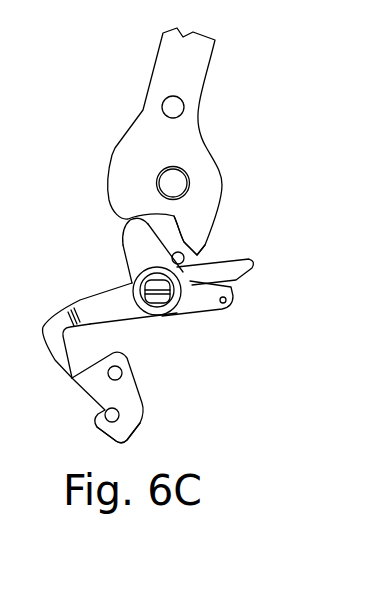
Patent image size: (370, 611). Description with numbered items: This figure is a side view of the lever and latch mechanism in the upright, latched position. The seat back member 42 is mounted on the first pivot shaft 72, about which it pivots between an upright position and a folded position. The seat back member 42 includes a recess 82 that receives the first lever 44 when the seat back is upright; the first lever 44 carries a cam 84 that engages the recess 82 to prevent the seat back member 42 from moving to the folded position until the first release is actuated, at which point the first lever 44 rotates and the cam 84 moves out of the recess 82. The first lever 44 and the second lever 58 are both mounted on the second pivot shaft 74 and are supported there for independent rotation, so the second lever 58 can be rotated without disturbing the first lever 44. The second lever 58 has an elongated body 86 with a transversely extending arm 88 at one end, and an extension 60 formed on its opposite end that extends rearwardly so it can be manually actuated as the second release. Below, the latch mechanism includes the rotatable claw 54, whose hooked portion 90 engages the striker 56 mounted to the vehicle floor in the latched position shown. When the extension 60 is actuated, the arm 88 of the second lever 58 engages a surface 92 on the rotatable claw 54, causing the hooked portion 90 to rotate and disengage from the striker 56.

The seat back member 42 is at (142, 128).
The first pivot shaft 72 is at (182, 183).
The recess 82 is at (183, 237).
The second pivot shaft 74 is at (173, 290).
The cam 84 is at (120, 243).
The first lever 44 is at (130, 255).
The elongated body 86 is at (67, 297).
The arm 88 is at (52, 343).
The surface 92 is at (75, 372).
The second lever 58 is at (130, 317).
The rotatable claw 54 is at (133, 385).
The striker 56 is at (105, 410).
The hooked portion 90 is at (108, 433).
The extension 60 is at (236, 273).